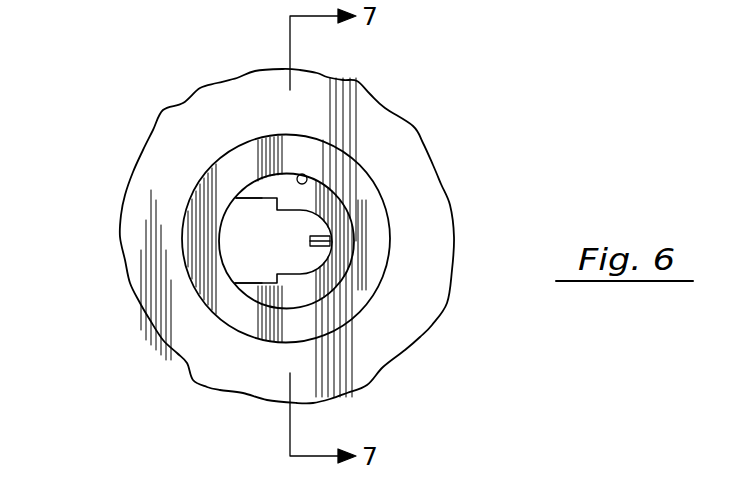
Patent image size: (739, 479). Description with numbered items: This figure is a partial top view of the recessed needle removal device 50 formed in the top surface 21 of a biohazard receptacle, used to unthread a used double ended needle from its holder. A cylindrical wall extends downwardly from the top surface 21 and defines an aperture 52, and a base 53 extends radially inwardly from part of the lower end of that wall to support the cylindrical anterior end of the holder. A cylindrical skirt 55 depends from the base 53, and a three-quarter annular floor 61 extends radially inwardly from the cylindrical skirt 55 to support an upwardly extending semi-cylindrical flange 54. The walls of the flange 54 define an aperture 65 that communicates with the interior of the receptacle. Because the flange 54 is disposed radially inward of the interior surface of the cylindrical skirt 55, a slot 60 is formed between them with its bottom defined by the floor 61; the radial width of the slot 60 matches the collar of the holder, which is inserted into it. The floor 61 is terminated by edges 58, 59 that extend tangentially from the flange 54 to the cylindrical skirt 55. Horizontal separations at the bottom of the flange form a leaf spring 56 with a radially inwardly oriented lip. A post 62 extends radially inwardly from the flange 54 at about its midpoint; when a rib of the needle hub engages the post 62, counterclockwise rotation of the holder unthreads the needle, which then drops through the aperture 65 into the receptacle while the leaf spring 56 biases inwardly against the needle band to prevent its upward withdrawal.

The top surface 21 is at (410, 162).
The needle removal device 50 is at (428, 228).
The aperture 52 is at (333, 165).
The base 53 is at (237, 177).
The semi-cylindrical flange 54 is at (388, 208).
The cylindrical skirt 55 is at (304, 174).
The leaf spring 56 is at (281, 283).
The edge 58 is at (253, 283).
The edge 59 is at (250, 198).
The slot 60 is at (277, 190).
The floor 61 is at (322, 278).
The post 62 is at (326, 247).
The aperture 65 is at (285, 255).